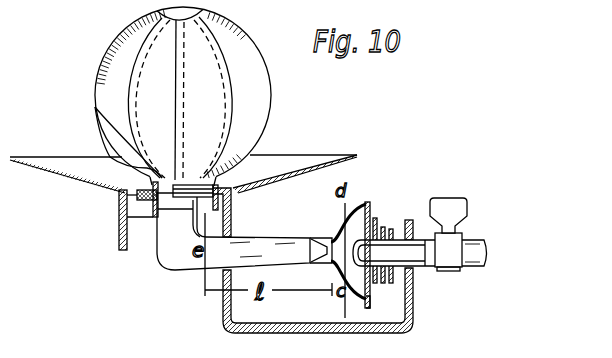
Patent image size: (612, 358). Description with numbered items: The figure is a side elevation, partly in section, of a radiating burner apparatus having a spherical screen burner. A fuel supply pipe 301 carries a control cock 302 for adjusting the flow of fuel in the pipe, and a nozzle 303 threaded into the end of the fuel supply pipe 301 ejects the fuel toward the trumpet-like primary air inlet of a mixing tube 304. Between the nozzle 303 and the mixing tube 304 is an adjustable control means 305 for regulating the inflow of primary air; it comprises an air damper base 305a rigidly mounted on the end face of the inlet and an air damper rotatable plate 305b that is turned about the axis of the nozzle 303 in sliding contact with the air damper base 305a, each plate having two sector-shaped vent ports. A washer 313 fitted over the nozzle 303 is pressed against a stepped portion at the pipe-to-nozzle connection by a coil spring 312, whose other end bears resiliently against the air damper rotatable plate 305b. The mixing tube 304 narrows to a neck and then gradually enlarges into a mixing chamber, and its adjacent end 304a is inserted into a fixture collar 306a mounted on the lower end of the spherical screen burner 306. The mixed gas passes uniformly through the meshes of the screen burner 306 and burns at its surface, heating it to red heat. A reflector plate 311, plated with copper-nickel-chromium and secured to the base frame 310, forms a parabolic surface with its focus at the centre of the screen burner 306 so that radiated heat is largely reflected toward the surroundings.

The fuel supply pipe 301 is at (475, 240).
The control cock 302 is at (448, 206).
The nozzle 303 is at (383, 228).
The mixing tube 304 is at (283, 247).
The end of the mixing tube 304a is at (167, 200).
The control means 305 is at (366, 203).
The air damper base 305a is at (361, 303).
The air damper rotatable plate 305b is at (372, 303).
The spherical screen burner 306 is at (118, 40).
The fixture collar 306a is at (145, 175).
The base frame 310 is at (230, 200).
The reflector plate 311 is at (309, 155).
The coil spring 312 is at (385, 282).
The washer 313 is at (393, 272).